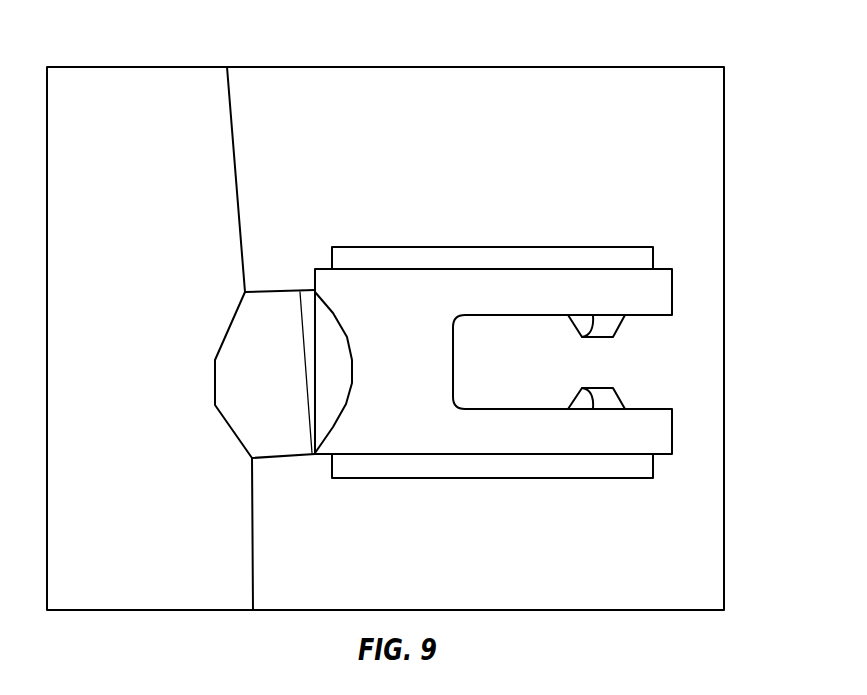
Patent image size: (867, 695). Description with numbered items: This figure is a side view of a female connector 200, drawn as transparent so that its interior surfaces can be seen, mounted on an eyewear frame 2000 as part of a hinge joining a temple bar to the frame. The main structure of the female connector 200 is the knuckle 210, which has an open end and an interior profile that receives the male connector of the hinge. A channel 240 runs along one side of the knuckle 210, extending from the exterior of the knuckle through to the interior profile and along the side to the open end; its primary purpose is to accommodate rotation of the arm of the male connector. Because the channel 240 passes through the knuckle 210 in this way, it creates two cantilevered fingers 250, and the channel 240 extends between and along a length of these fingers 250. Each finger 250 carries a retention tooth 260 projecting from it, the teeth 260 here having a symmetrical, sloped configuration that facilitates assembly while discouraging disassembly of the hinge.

The eyewear frame 2000 is at (152, 95).
The female connector 200 is at (573, 347).
The knuckle 210 is at (431, 376).
The cantilevered fingers 250 is at (618, 270).
The retention tooth 260 is at (578, 338).
The channel 240 is at (648, 360).